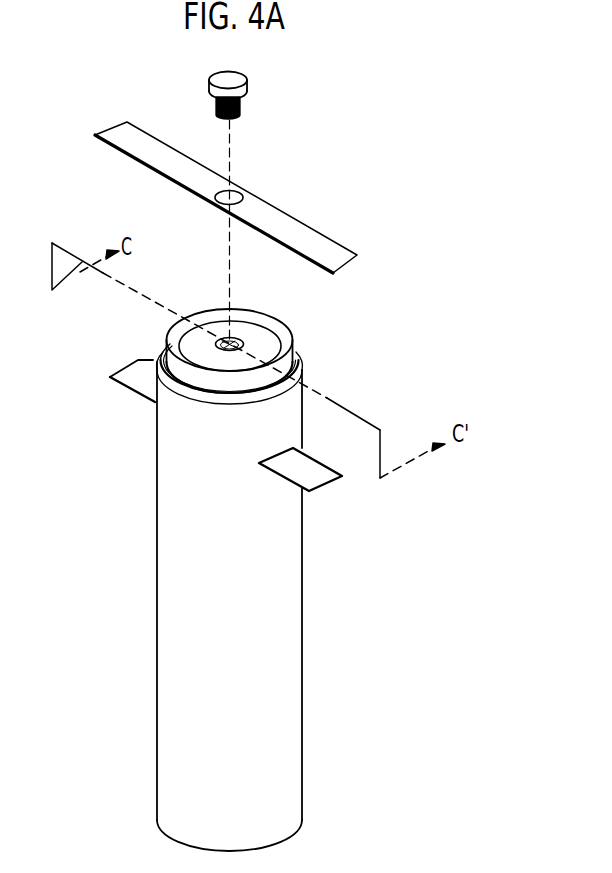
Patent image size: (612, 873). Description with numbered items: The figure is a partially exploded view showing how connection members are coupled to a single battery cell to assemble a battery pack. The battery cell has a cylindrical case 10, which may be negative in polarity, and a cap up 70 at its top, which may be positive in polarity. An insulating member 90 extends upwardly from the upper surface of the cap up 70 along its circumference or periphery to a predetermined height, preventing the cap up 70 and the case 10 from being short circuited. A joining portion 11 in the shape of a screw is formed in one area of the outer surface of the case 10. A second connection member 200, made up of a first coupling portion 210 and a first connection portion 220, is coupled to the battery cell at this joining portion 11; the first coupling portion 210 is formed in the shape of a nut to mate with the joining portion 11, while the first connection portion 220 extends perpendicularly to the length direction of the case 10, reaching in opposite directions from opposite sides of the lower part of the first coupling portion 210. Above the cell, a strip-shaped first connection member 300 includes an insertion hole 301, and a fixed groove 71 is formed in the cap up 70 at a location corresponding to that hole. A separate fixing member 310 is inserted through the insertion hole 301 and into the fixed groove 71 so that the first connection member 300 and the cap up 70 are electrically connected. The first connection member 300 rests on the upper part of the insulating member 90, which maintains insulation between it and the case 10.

The case 10 is at (180, 677).
The joining portion 11 is at (158, 358).
The cap up 70 is at (258, 333).
The fixed groove 71 is at (222, 340).
The insulating member 90 is at (172, 330).
The second connection member 200 is at (266, 405).
The first coupling portion 210 is at (298, 395).
The first connection portion 220 is at (305, 466).
The first connection member 300 is at (148, 157).
The insertion hole 301 is at (237, 195).
The fixing member 310 is at (243, 81).